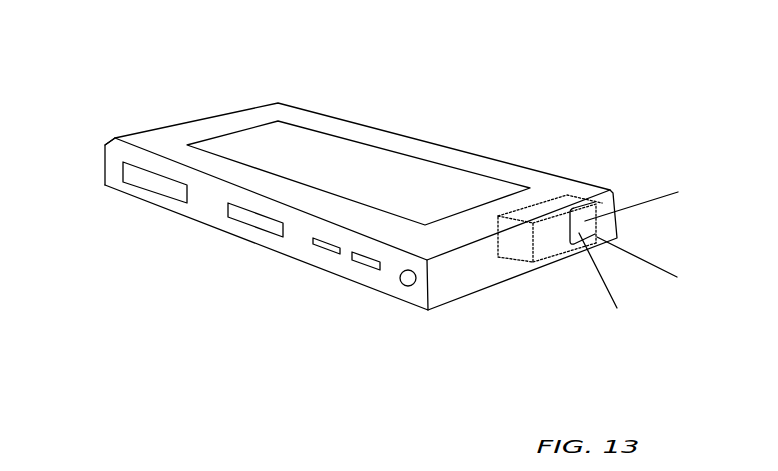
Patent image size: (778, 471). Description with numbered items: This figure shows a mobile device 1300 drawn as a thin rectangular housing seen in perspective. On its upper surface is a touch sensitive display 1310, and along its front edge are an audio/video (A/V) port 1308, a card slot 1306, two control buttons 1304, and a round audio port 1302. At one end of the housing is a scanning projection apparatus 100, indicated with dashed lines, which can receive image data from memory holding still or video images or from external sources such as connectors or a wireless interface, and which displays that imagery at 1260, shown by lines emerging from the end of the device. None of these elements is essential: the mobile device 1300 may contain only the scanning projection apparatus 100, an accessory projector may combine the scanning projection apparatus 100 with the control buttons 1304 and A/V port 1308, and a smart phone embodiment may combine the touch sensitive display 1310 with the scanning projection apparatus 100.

The mobile device 1300 is at (378, 198).
The touch sensitive display 1310 is at (375, 160).
The audio/video (A/V) port 1308 is at (143, 180).
The card slot 1306 is at (247, 219).
The control buttons 1304 is at (358, 265).
The audio port 1302 is at (406, 286).
The scanning projection apparatus 100 is at (563, 200).
The displayed imagery location 1260 is at (626, 250).